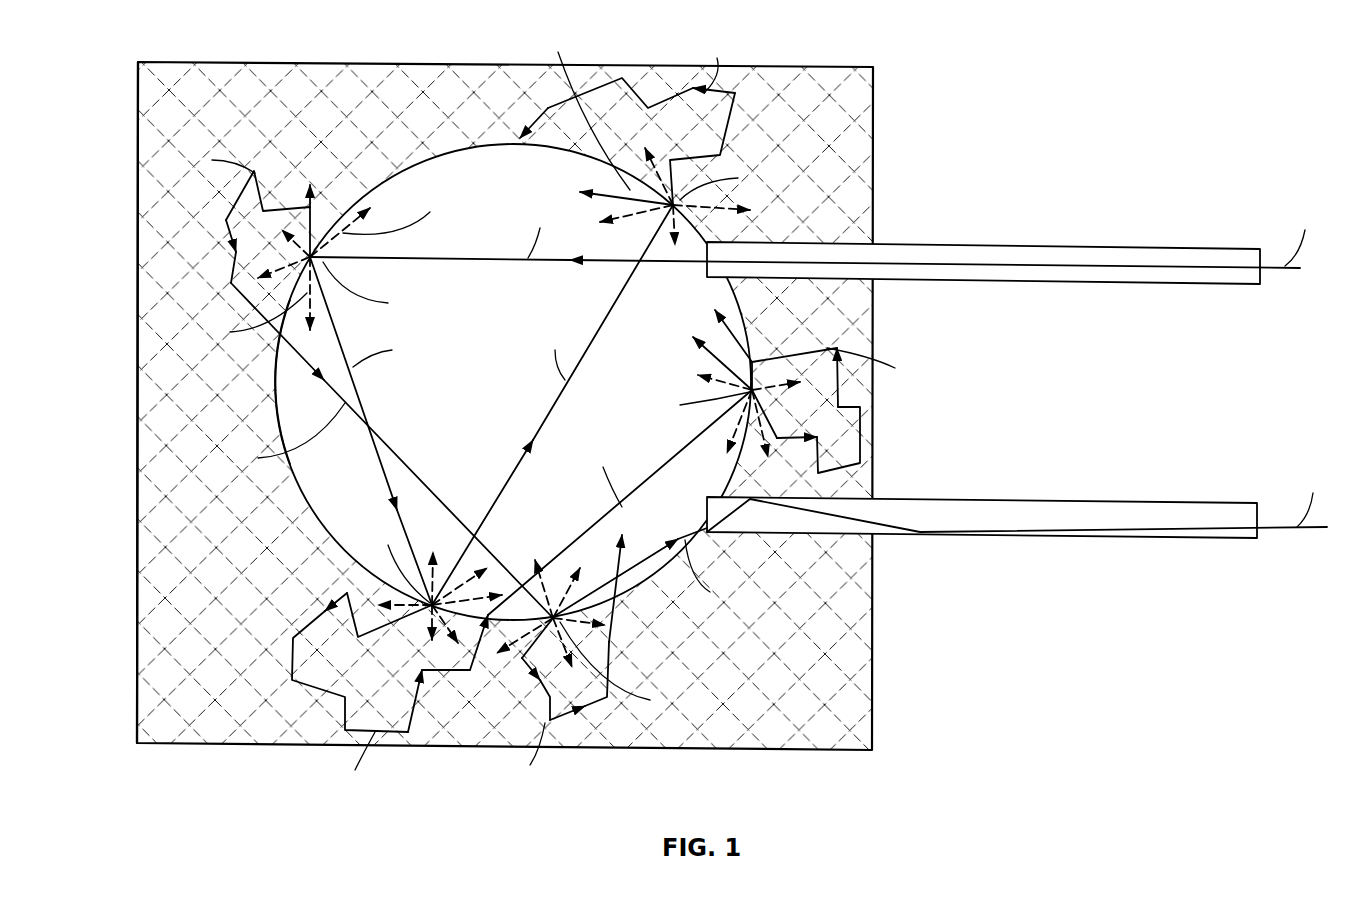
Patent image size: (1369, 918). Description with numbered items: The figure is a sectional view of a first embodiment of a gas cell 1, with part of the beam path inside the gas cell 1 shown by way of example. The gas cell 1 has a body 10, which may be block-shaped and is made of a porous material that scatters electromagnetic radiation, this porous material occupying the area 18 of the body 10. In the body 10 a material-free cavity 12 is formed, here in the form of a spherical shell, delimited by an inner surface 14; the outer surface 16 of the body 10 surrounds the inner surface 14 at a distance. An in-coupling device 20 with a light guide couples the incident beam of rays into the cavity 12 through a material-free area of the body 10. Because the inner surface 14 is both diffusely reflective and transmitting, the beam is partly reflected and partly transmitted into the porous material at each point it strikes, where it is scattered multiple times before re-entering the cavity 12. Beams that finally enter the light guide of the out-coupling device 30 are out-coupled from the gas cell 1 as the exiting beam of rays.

The gas cell 1 is at (195, 752).
The body 10 is at (160, 100).
The cavity 12 is at (353, 483).
The inner surface 14 is at (278, 400).
The outer surface 16 is at (134, 495).
The area containing the porous material 18 is at (157, 628).
The in-coupling device 20 is at (1150, 246).
The out-coupling device 30 is at (1182, 502).